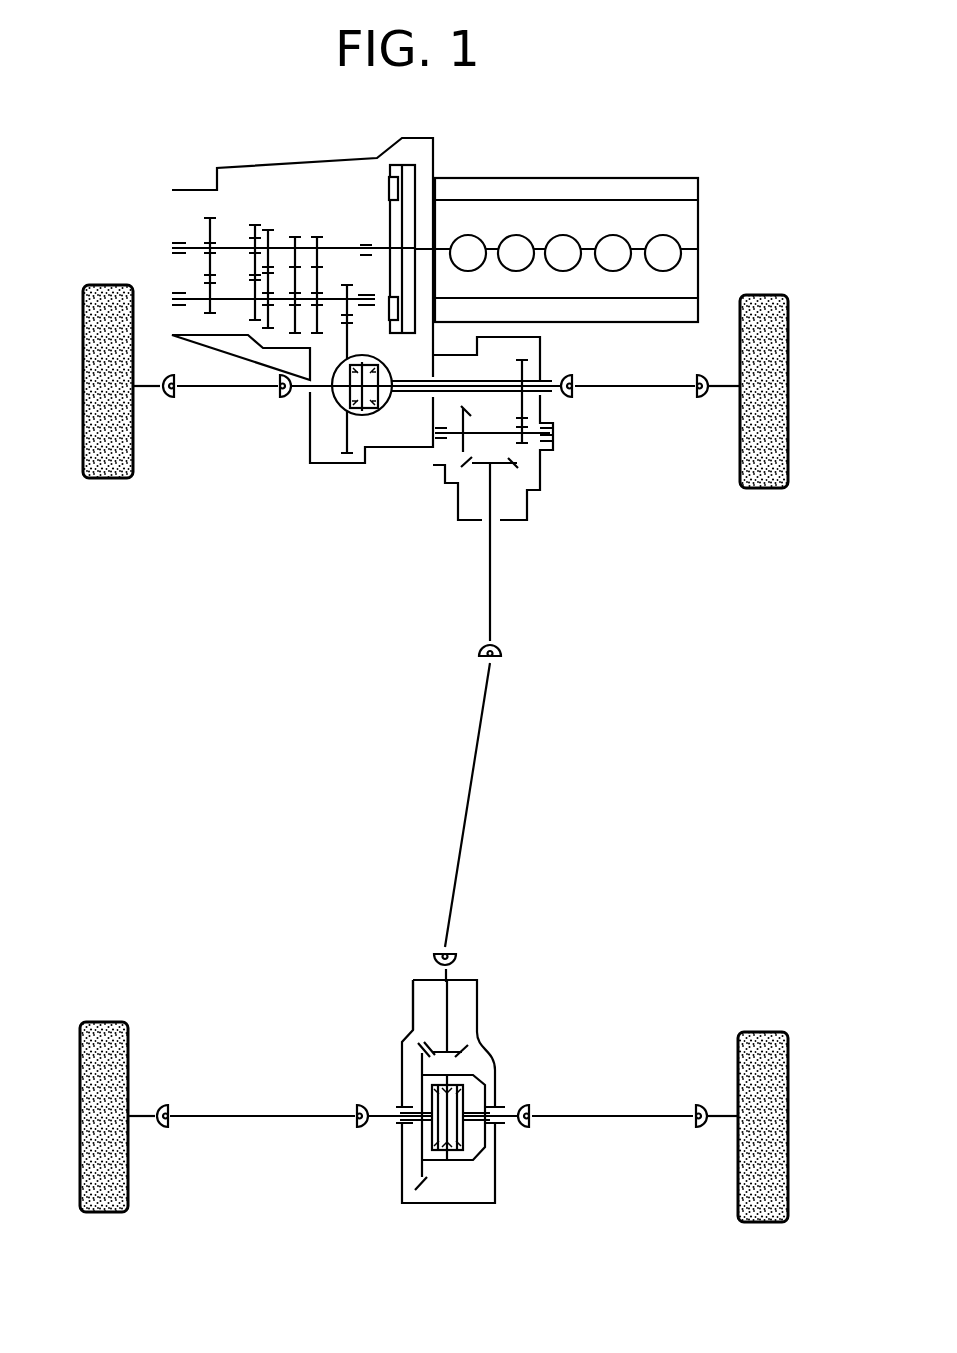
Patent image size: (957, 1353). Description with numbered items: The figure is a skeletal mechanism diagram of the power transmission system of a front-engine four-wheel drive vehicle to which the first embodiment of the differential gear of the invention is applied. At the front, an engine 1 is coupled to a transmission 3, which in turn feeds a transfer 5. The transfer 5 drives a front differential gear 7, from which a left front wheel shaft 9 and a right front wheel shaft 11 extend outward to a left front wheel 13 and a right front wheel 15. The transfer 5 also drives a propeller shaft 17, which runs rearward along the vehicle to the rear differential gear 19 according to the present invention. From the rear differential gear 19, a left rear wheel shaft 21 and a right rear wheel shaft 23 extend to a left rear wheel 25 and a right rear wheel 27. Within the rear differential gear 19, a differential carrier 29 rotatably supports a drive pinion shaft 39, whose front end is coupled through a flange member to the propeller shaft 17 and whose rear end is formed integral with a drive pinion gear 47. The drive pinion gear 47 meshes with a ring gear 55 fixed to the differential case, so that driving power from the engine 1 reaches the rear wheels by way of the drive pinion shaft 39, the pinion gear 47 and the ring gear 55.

The engine 1 is at (573, 190).
The transmission 3 is at (299, 207).
The transfer 5 is at (406, 470).
The front differential gear 7 is at (333, 413).
The front wheel shaft 9 is at (221, 394).
The front wheel shaft 11 is at (629, 399).
The front wheel 13 is at (88, 333).
The front wheel 15 is at (760, 347).
The propeller shaft 17 is at (478, 760).
The rear differential gear 19 is at (479, 1066).
The rear wheel shaft 21 is at (250, 1124).
The rear wheel shaft 23 is at (606, 1127).
The rear wheel 25 is at (85, 1055).
The rear wheel 27 is at (776, 1069).
The differential carrier 29 is at (413, 995).
The drive pinion shaft 39 is at (449, 997).
The drive pinion gear 47 is at (430, 1041).
The ring gear 55 is at (420, 1056).